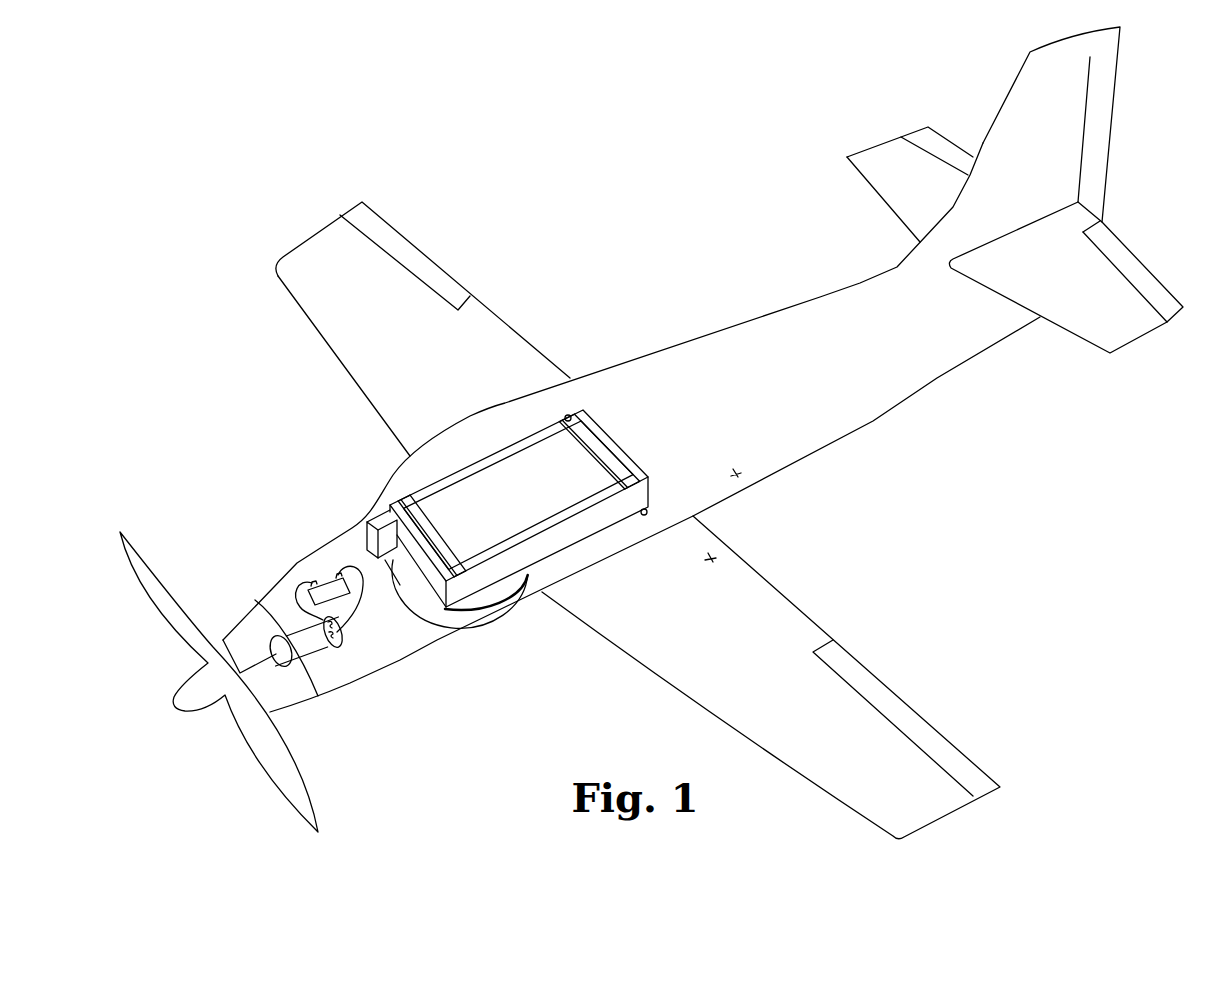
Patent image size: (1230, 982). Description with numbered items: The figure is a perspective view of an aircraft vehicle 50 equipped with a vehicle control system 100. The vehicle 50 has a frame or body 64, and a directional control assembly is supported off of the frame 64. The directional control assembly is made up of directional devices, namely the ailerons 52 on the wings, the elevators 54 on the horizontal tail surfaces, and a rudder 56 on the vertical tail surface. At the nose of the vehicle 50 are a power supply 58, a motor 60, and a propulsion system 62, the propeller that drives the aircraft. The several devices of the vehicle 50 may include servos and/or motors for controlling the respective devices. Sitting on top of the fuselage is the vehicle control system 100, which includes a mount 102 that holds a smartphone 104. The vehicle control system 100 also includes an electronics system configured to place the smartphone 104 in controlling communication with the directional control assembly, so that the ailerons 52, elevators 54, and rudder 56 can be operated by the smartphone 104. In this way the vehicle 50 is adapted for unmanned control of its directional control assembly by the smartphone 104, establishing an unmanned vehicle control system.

The vehicle 50 is at (858, 462).
The ailerons 52 is at (425, 262).
The elevators 54 is at (935, 138).
The rudder 56 is at (1102, 145).
The power supply 58 is at (327, 578).
The motor 60 is at (318, 643).
The propulsion system 62 is at (267, 762).
The frame or body 64 is at (740, 473).
The vehicle control system 100 is at (512, 424).
The mount 102 is at (627, 462).
The smartphone 104 is at (555, 463).